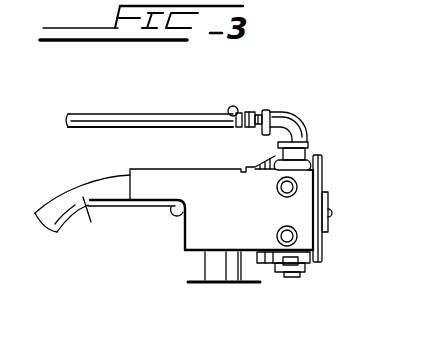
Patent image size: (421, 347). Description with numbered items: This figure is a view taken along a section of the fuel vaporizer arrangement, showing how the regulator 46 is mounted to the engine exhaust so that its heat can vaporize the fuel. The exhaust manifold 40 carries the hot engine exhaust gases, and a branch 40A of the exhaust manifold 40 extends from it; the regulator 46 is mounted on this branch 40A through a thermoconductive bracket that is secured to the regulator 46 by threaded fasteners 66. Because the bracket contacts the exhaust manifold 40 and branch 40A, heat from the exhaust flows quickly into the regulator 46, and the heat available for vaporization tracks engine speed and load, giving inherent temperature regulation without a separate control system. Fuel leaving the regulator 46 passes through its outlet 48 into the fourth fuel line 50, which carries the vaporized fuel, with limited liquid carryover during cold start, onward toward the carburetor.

The exhaust manifold 40 is at (215, 264).
The branch of the exhaust manifold 40A is at (82, 214).
The regulator 46 is at (297, 278).
The outlet 48 is at (299, 124).
The fourth fuel line 50 is at (151, 113).
The threaded fasteners 66 is at (293, 189).